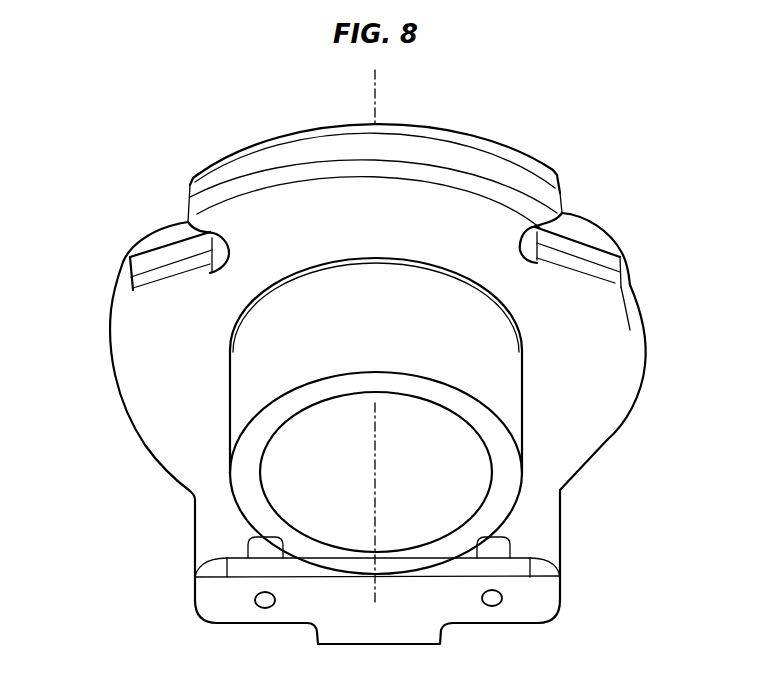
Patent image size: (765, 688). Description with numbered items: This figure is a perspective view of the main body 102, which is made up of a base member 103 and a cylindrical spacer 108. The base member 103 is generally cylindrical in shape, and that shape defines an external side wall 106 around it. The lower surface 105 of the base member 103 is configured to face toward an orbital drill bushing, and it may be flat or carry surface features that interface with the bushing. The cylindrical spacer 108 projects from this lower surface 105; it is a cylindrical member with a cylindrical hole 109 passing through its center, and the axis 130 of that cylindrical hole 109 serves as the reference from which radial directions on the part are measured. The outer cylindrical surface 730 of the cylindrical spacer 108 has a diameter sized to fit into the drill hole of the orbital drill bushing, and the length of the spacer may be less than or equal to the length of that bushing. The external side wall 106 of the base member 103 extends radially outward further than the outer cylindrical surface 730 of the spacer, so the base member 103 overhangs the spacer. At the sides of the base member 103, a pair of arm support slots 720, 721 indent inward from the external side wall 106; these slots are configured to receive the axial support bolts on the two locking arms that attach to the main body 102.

The main body 102 is at (672, 133).
The base member 103 is at (632, 283).
The lower surface 105 is at (593, 417).
The external side wall 106 is at (528, 177).
The cylindrical spacer 108 is at (243, 389).
The cylindrical hole 109 is at (337, 535).
The axis 130 is at (376, 457).
The arm support slot 720 is at (160, 258).
The arm support slot 721 is at (585, 253).
The outer cylindrical surface 730 is at (441, 285).